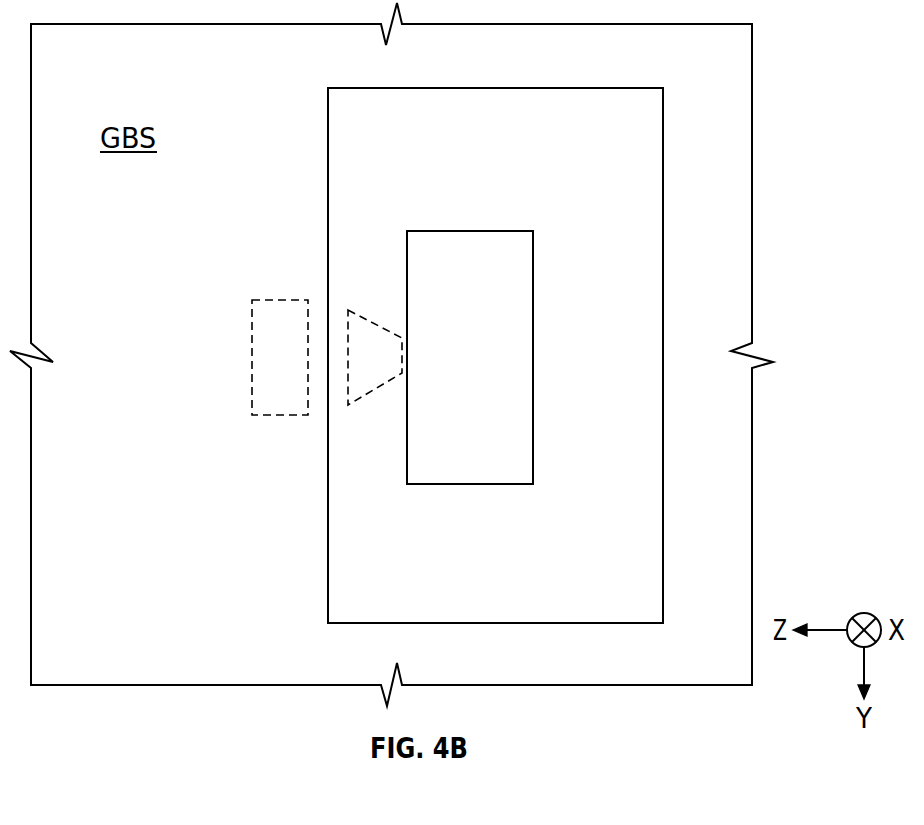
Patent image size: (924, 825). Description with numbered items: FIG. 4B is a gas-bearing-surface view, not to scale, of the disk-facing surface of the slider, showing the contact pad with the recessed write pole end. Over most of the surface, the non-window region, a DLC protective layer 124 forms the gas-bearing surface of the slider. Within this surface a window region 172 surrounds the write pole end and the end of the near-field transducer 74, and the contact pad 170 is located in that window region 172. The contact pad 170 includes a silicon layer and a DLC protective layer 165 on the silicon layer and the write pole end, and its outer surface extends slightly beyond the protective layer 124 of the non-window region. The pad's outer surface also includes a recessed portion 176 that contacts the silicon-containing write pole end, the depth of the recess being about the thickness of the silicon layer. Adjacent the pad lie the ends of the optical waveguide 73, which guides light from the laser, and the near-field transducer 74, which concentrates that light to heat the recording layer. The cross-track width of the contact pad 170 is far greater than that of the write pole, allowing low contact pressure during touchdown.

The protective layer 124 is at (167, 301).
The protective layer 165 is at (635, 167).
The contact pad 170 is at (561, 106).
The window region 172 is at (663, 628).
The recessed portion 176 is at (533, 222).
The optical waveguide 73 is at (358, 337).
The near-field transducer 74 is at (288, 405).